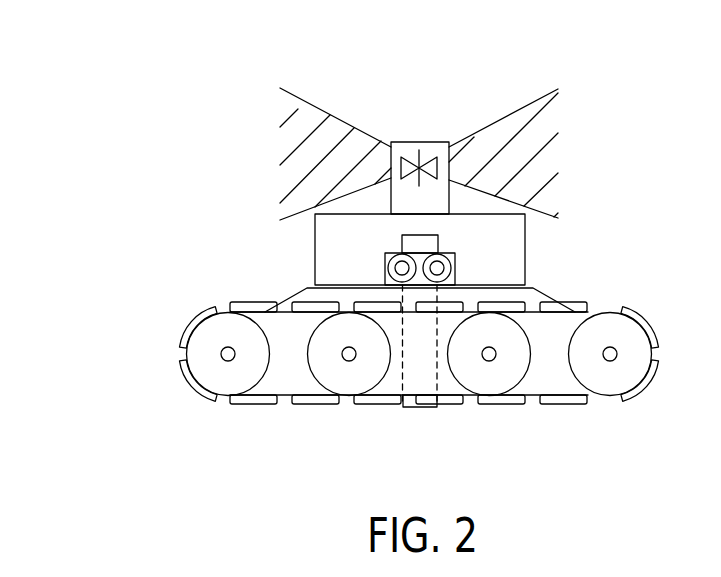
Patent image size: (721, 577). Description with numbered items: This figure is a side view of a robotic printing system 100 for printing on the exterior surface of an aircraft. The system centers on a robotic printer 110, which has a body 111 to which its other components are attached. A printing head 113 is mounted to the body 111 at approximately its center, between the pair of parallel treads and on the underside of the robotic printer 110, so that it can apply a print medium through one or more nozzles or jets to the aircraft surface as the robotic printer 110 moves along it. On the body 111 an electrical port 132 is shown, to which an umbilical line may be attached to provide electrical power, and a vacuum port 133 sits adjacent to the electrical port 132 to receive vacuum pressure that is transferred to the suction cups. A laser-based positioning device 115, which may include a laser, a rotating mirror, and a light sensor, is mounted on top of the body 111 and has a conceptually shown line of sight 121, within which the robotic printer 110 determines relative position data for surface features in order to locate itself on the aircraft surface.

The robotic printing system 100 is at (344, 281).
The robotic printer 110 is at (365, 116).
The body 111 is at (315, 264).
The printing head 113 is at (415, 407).
The laser-based positioning device 115 is at (424, 142).
The line of sight 121 is at (327, 112).
The electrical port 132 is at (384, 262).
The vacuum port 133 is at (457, 254).